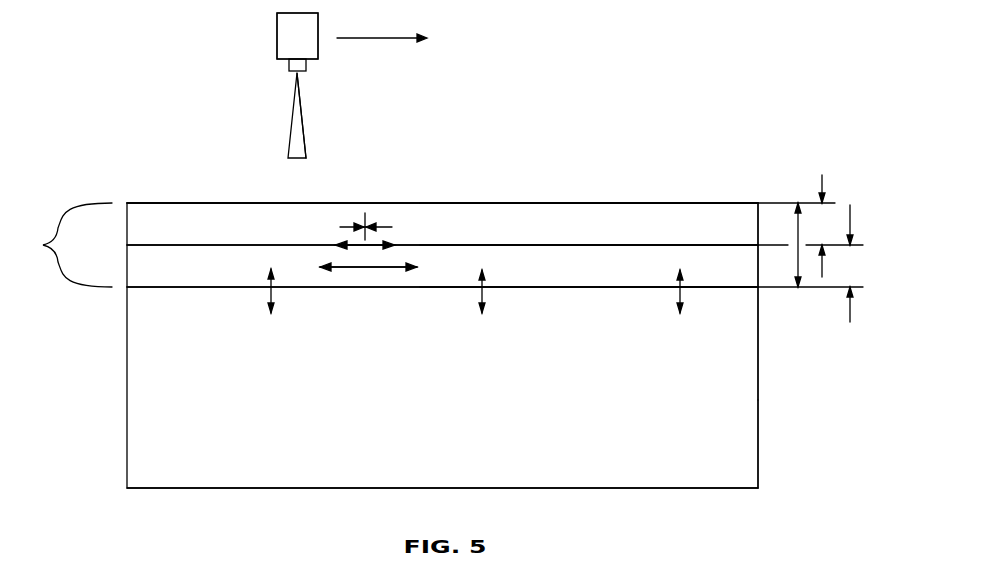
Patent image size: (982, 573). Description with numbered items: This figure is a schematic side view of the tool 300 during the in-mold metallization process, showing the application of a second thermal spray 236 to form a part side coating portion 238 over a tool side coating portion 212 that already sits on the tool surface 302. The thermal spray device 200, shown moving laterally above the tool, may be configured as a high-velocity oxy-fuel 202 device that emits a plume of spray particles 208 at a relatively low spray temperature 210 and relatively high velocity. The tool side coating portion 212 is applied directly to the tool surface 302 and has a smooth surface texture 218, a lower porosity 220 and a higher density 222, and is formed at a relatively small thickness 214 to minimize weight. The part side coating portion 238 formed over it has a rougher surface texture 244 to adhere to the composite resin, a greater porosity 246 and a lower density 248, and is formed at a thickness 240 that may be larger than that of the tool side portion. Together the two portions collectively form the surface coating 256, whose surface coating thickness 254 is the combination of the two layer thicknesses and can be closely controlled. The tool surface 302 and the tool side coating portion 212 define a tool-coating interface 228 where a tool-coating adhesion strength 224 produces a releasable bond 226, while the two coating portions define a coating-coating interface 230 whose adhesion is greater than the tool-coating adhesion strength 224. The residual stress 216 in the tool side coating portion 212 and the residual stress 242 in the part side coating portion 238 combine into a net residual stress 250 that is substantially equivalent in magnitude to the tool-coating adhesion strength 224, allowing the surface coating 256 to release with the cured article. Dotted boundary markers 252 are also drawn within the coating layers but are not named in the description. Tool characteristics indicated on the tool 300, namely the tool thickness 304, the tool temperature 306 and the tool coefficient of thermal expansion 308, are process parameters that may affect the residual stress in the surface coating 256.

The thermal spray device 200 is at (277, 32).
The high-velocity oxy-fuel device 202 is at (277, 37).
The second thermal spray 236 is at (297, 93).
The spray particles 208 is at (292, 107).
The spray temperature 210 is at (305, 123).
The porosity of part side coating portion 246 is at (165, 212).
The density of part side coating portion 248 is at (219, 213).
The residual stress in part side coating portion 242 is at (339, 227).
The net residual stress 250 is at (393, 246).
The surface texture of part side coating portion 244 is at (485, 202).
The boundary 252 is at (549, 213).
The coating-coating interface 230 is at (643, 245).
The surface coating thickness 254 is at (796, 232).
The thickness of part side coating portion 240 is at (822, 178).
The thickness of tool side coating portion 214 is at (850, 210).
The surface coating 256 is at (58, 245).
The part side coating portion 238 is at (143, 227).
The tool side coating portion 212 is at (143, 268).
The surface texture of tool side coating portion 218 is at (180, 288).
The porosity of tool side coating portion 220 is at (225, 275).
The tool-coating adhesion strength 224 is at (275, 288).
The releasable bond 226 is at (329, 288).
The residual stress in tool side coating portion 216 is at (380, 268).
The density of tool side coating portion 222 is at (579, 277).
The tool-coating interface 228 is at (640, 290).
The tool surface 302 is at (723, 288).
The tool thickness 304 is at (760, 373).
The tool 300 is at (760, 428).
The tool temperature 306 is at (760, 468).
The tool coefficient of thermal expansion 308 is at (697, 490).